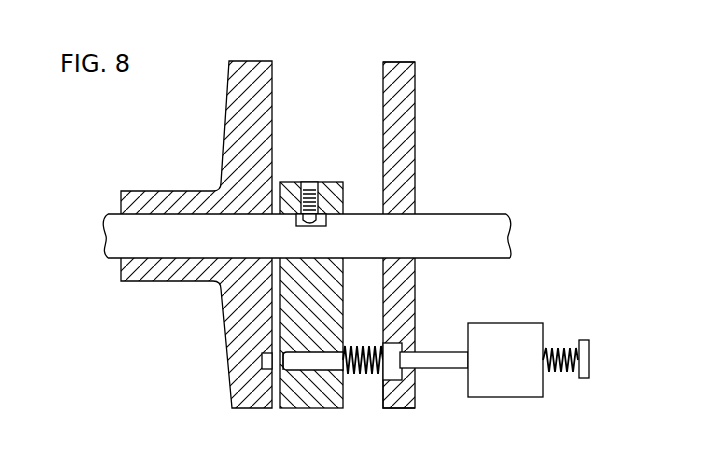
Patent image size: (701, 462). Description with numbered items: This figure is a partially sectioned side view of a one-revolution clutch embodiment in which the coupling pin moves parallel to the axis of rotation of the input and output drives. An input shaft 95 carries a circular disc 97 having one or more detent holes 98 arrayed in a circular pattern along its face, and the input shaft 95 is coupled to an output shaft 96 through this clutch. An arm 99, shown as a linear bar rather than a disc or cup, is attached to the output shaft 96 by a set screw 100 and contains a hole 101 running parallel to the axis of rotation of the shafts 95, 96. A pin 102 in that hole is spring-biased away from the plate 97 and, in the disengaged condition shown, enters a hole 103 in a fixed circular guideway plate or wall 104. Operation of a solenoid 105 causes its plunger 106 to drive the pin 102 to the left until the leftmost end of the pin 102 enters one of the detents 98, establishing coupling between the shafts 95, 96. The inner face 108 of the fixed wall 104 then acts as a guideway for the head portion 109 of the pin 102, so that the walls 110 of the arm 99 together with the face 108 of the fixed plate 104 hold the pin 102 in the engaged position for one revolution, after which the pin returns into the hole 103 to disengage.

The input shaft 95 is at (153, 270).
The output shaft 96 is at (122, 224).
The circular disc 97 is at (236, 112).
The detent holes 98 is at (262, 362).
The arm 99 is at (309, 406).
The set screw 100 is at (311, 194).
The hole 101 is at (283, 404).
The pin 102 is at (324, 358).
The hole 103 is at (396, 396).
The fixed circular guideway plate 104 is at (404, 287).
The solenoid 105 is at (497, 334).
The plunger 106 is at (429, 362).
The inner face 108 is at (384, 64).
The head portion 109 is at (412, 331).
The walls 110 is at (347, 398).